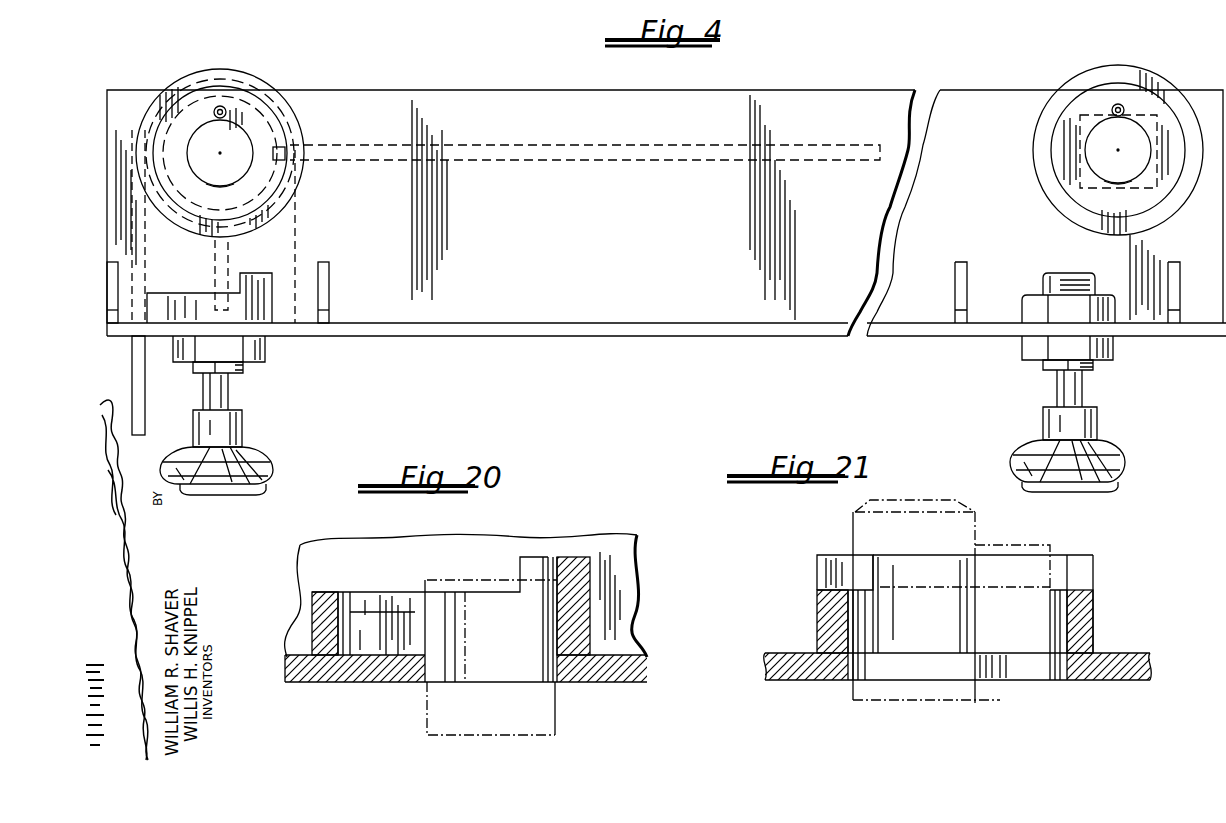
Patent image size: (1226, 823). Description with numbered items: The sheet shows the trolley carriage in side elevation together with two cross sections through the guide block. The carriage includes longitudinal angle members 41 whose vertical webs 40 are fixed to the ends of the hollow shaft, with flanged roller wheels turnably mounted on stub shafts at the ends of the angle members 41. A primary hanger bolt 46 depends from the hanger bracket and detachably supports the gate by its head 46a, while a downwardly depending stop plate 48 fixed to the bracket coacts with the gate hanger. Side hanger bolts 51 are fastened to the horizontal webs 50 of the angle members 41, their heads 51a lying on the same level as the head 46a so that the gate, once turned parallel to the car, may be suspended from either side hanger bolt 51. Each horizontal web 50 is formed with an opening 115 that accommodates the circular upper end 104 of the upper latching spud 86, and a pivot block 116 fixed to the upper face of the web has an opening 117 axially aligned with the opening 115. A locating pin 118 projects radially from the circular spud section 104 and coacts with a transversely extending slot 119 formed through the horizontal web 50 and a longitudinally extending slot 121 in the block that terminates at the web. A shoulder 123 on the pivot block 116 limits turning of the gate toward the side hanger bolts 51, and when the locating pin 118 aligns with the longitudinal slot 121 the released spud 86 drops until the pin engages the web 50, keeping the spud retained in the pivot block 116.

In FIG. 4, the vertical web 40 is at (817, 115).
In FIG. 20, the vertical web 40 is at (298, 598).
In FIG. 4, the angle member 41 is at (878, 88).
In FIG. 20, the angle member 41 is at (625, 563).
In FIG. 4, the stop plate 48 is at (132, 368).
In FIG. 4, the horizontal web 50 is at (711, 323).
In FIG. 20, the horizontal web 50 is at (652, 668).
In FIG. 21, the horizontal web 50 is at (1123, 665).
In FIG. 4, the hanger bolt 46 is at (250, 468).
In FIG. 4, the hanger bolt head 46a is at (255, 487).
In FIG. 4, the side hanger bolt 51 is at (1120, 464).
In FIG. 4, the side hanger bolt head 51a is at (1106, 478).
In FIG. 4, the pivot block 116 is at (276, 290).
In FIG. 20, the pivot block 116 is at (569, 554).
In FIG. 21, the pivot block 116 is at (1086, 552).
In FIG. 20, the upper end of locking spud 104 is at (438, 575).
In FIG. 21, the upper end of locking spud 104 is at (860, 531).
In FIG. 20, the opening 115 is at (536, 673).
In FIG. 21, the opening 115 is at (853, 680).
In FIG. 20, the opening 117 is at (463, 643).
In FIG. 21, the opening 117 is at (860, 600).
In FIG. 20, the locating pin 118 is at (397, 615).
In FIG. 21, the locating pin 118 is at (1006, 545).
In FIG. 20, the longitudinally extending slot 121 is at (346, 592).
In FIG. 20, the upper latching spud 86 is at (560, 725).
In FIG. 21, the upper latching spud 86 is at (980, 700).
In FIG. 21, the shoulder 123 is at (1082, 577).
In FIG. 21, the transversely extending slot 119 is at (1062, 622).